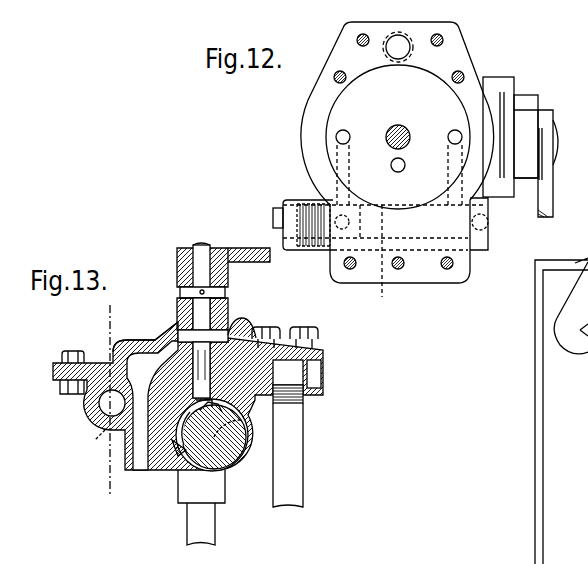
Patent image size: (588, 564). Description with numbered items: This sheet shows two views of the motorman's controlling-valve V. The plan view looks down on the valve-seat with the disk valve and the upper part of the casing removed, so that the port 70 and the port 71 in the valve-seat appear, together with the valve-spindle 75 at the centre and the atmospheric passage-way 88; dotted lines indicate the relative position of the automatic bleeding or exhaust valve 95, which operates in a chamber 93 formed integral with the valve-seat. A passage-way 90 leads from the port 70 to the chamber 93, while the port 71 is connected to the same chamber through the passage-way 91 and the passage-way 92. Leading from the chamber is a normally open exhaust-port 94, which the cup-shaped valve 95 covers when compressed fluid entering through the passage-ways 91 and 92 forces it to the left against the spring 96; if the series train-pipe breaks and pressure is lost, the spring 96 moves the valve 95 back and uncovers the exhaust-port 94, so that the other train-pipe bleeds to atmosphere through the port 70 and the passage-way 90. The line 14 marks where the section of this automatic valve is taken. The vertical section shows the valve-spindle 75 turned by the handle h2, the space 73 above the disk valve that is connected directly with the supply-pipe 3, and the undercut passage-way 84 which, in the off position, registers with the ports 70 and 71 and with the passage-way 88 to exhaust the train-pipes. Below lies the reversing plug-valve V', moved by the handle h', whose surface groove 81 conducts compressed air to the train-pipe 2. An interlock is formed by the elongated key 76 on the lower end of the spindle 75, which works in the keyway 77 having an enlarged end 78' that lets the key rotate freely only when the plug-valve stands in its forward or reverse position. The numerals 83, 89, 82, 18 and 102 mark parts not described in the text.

In FIG. 12, the bolt hole / bolt 83 is at (405, 44).
In FIG. 13, the bolt hole / bolt 83 is at (318, 357).
In FIG. 12, the valve-spindle 75 is at (402, 134).
In FIG. 13, the valve-spindle 75 is at (205, 312).
In FIG. 12, the port 70 is at (346, 135).
In FIG. 12, the port 71 is at (453, 133).
In FIG. 12, the passage-way 90 is at (349, 167).
In FIG. 13, the passage-way 90 is at (110, 358).
In FIG. 12, the passage-way 91 is at (452, 167).
In FIG. 12, the passage-way 88 is at (402, 170).
In FIG. 13, the passage-way 88 is at (140, 448).
In FIG. 12, the chamber 93 is at (383, 260).
In FIG. 12, the exhaust-port 94 is at (335, 229).
In FIG. 13, the exhaust-port 94 is at (100, 434).
In FIG. 12, the automatic valve 95 is at (310, 197).
In FIG. 12, the spring 96 is at (300, 215).
In FIG. 12, the passage-way 92 is at (452, 228).
In FIG. 13, the passage-way 92 is at (98, 408).
In FIG. 13, the section line 14 is at (120, 397).
In FIG. 13, the undercut passage-way 84 is at (168, 350).
In FIG. 13, the space 73 is at (228, 342).
In FIG. 13, the fitting flange 89 is at (272, 345).
In FIG. 13, the seat 82 is at (222, 406).
In FIG. 13, the enlarged end 78' is at (236, 413).
In FIG. 13, the keyway 77 is at (236, 428).
In FIG. 13, the valve member 18 is at (242, 441).
In FIG. 13, the key 76 is at (320, 392).
In FIG. 13, the supply-pipe 3 is at (290, 460).
In FIG. 13, the train-pipe 2 is at (210, 525).
In FIG. 13, the groove or passage-way 81 is at (182, 452).
In FIG. 12, the bracket 102 is at (561, 411).
In FIG. 12, the handle h' is at (558, 163).
In FIG. 13, the handle h2 is at (240, 256).
In FIG. 12, the controlling-valve V is at (260, 104).
In FIG. 13, the controlling-valve V is at (33, 352).
In FIG. 13, the reversing plug-valve V' is at (246, 474).